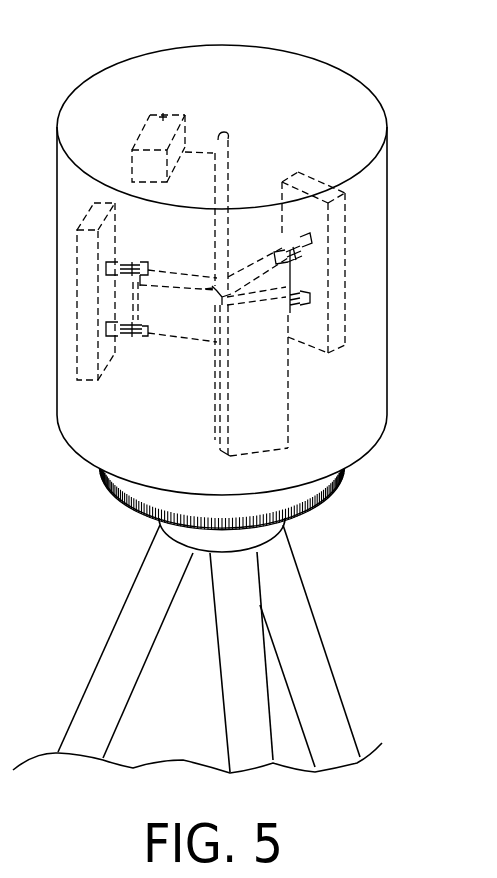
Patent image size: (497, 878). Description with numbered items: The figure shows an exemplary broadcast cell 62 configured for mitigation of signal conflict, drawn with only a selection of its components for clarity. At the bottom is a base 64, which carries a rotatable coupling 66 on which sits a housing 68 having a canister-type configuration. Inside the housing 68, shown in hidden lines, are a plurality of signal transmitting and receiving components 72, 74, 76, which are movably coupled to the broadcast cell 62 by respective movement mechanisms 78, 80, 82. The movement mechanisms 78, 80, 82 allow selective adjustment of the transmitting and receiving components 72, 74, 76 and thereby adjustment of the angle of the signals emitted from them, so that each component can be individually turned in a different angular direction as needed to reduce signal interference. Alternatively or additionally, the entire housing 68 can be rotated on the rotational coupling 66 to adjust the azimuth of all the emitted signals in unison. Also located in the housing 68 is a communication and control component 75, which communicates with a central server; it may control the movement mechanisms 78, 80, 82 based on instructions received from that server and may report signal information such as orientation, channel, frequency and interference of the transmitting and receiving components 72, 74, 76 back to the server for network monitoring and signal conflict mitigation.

The broadcast cell 62 is at (413, 89).
The base 64 is at (300, 635).
The rotatable coupling 66 is at (338, 490).
The housing 68 is at (377, 352).
The signal transmitting and receiving component 72 is at (270, 417).
The signal transmitting and receiving component 74 is at (90, 382).
The communication and control component 75 is at (163, 113).
The signal transmitting and receiving component 76 is at (287, 180).
The movement mechanism 78 is at (222, 296).
The movement mechanism 80 is at (140, 260).
The movement mechanism 82 is at (281, 244).